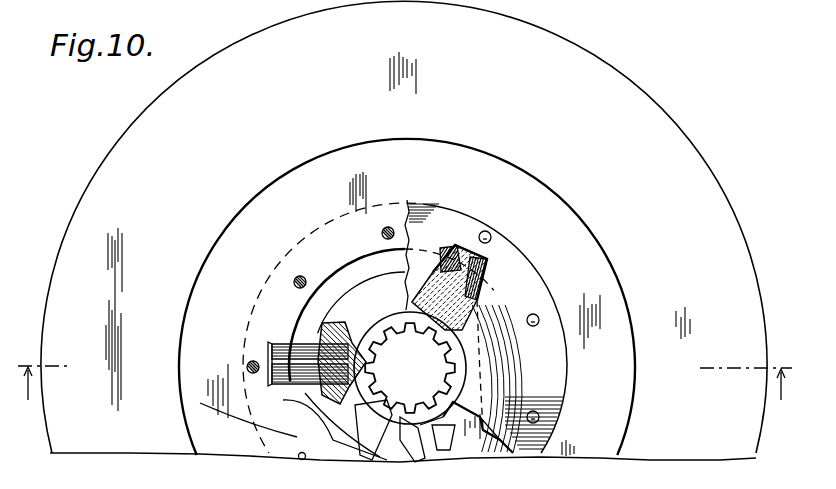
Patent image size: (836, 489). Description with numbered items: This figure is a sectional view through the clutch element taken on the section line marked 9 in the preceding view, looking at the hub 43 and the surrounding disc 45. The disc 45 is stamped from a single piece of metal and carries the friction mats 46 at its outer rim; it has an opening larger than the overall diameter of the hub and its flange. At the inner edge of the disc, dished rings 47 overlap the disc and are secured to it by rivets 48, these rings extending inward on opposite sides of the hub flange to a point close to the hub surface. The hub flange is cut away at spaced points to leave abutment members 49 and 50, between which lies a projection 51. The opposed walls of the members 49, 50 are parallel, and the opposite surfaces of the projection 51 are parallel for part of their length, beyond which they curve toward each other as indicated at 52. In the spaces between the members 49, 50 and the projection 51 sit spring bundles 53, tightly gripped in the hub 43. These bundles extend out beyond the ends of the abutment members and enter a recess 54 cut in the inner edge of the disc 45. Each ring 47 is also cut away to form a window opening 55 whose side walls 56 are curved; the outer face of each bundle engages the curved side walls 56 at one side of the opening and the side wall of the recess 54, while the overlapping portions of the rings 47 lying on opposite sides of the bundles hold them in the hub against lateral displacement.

The section line 9- 9 is at (405, 392).
The hub 43 is at (370, 367).
The disc 45 is at (610, 304).
The friction mats 46 is at (676, 130).
The dished rings 47 is at (503, 378).
The rivets 48 is at (540, 418).
The abutment member 49 is at (300, 459).
The abutment member 50 is at (320, 328).
The projection 51 is at (337, 395).
The curved surfaces 52 is at (320, 392).
The spring bundles 53 is at (278, 340).
The recess 54 is at (285, 374).
The window opening 55 is at (486, 257).
The side walls 56 is at (492, 276).